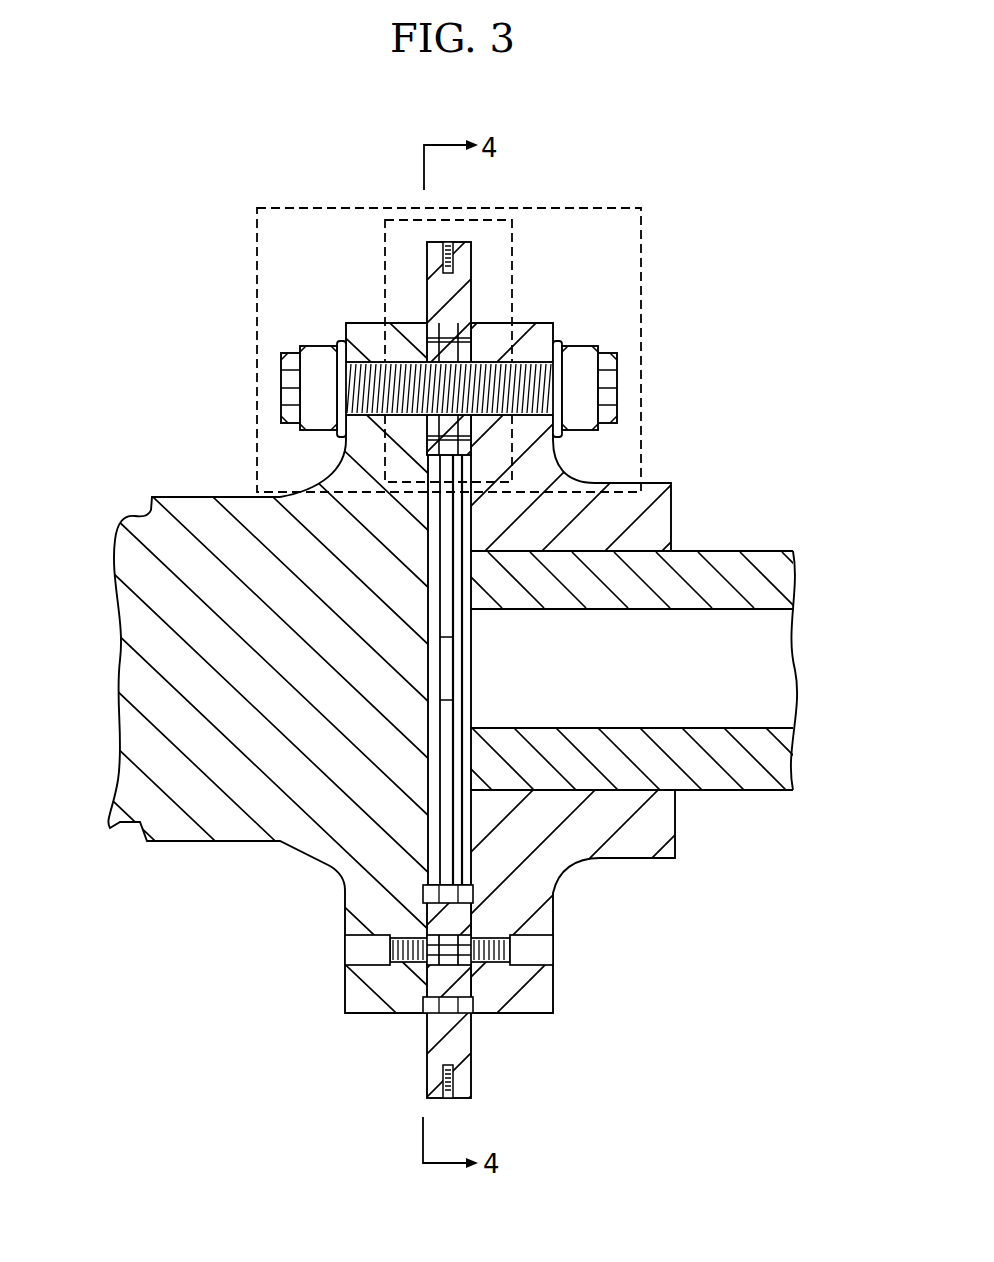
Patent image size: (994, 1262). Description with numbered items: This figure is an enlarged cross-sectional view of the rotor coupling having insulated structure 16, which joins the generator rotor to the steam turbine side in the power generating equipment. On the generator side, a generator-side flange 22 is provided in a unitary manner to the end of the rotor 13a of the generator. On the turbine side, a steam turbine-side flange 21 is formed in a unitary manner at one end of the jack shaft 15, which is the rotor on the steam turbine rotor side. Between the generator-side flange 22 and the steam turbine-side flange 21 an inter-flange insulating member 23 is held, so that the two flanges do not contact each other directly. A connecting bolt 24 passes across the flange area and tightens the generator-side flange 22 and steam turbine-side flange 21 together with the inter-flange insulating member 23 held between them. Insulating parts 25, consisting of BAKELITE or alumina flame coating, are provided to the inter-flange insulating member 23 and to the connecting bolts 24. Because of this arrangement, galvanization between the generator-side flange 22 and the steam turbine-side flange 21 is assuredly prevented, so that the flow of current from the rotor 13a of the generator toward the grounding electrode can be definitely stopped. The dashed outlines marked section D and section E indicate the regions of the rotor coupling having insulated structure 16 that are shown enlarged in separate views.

The jack shaft 15 is at (497, 581).
The rotor 13a is at (765, 665).
The rotor coupling having insulated structure 16 is at (355, 238).
The steam turbine-side flange 21 is at (378, 1013).
The generator-side flange 22 is at (495, 1013).
The inter-flange insulating member 23 is at (474, 262).
The connecting bolt 24 is at (617, 382).
The insulating parts 25 is at (540, 323).
The section D is at (512, 263).
The section E is at (641, 268).